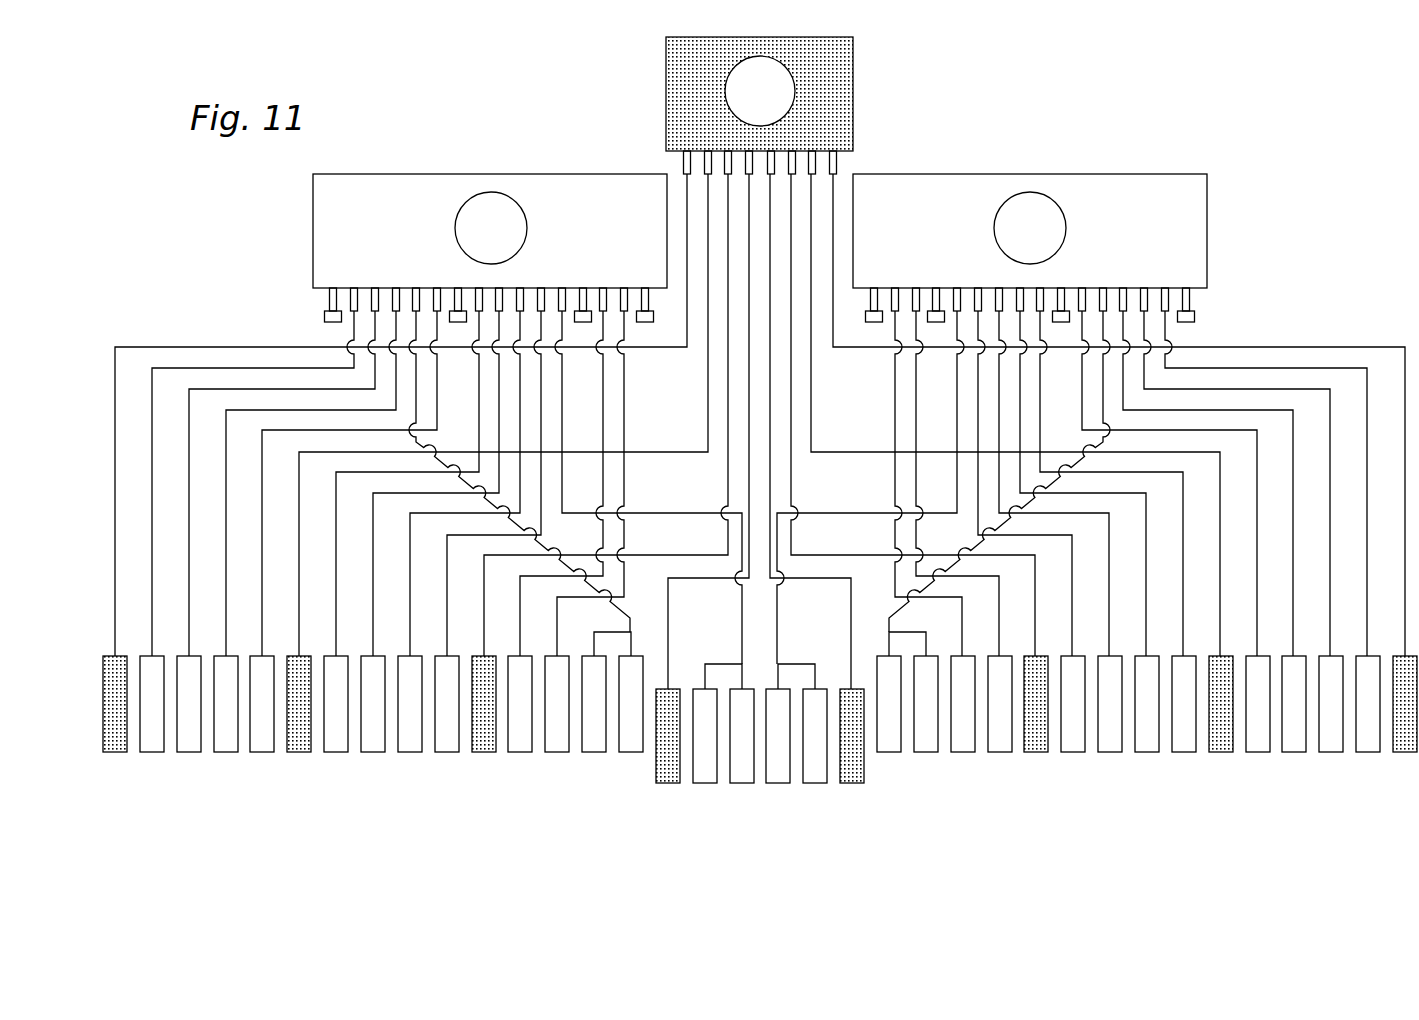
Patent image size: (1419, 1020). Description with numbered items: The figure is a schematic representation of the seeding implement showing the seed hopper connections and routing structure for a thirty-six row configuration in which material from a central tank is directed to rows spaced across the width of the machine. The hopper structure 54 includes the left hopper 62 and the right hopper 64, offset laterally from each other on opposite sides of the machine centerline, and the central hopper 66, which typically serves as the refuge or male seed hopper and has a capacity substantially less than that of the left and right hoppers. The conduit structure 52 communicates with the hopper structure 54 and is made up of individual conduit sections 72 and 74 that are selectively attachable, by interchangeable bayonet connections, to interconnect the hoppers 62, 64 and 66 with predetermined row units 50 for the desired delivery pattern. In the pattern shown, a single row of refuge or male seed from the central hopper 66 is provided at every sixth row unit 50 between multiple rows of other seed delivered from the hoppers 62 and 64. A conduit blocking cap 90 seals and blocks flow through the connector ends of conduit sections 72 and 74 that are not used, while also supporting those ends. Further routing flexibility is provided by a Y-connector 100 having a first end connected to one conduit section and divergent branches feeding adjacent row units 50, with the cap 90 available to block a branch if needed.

The row units 50 is at (1403, 788).
The conduit structure 52 is at (1390, 334).
The hopper structure 54 is at (940, 140).
The left hopper 62 is at (436, 174).
The right hopper 64 is at (1167, 174).
The central hopper 66 is at (854, 64).
The conduit section 72 is at (197, 368).
The conduit section 74 is at (353, 292).
The conduit blocking cap 90 is at (323, 318).
The Y-connector 100 is at (637, 636).